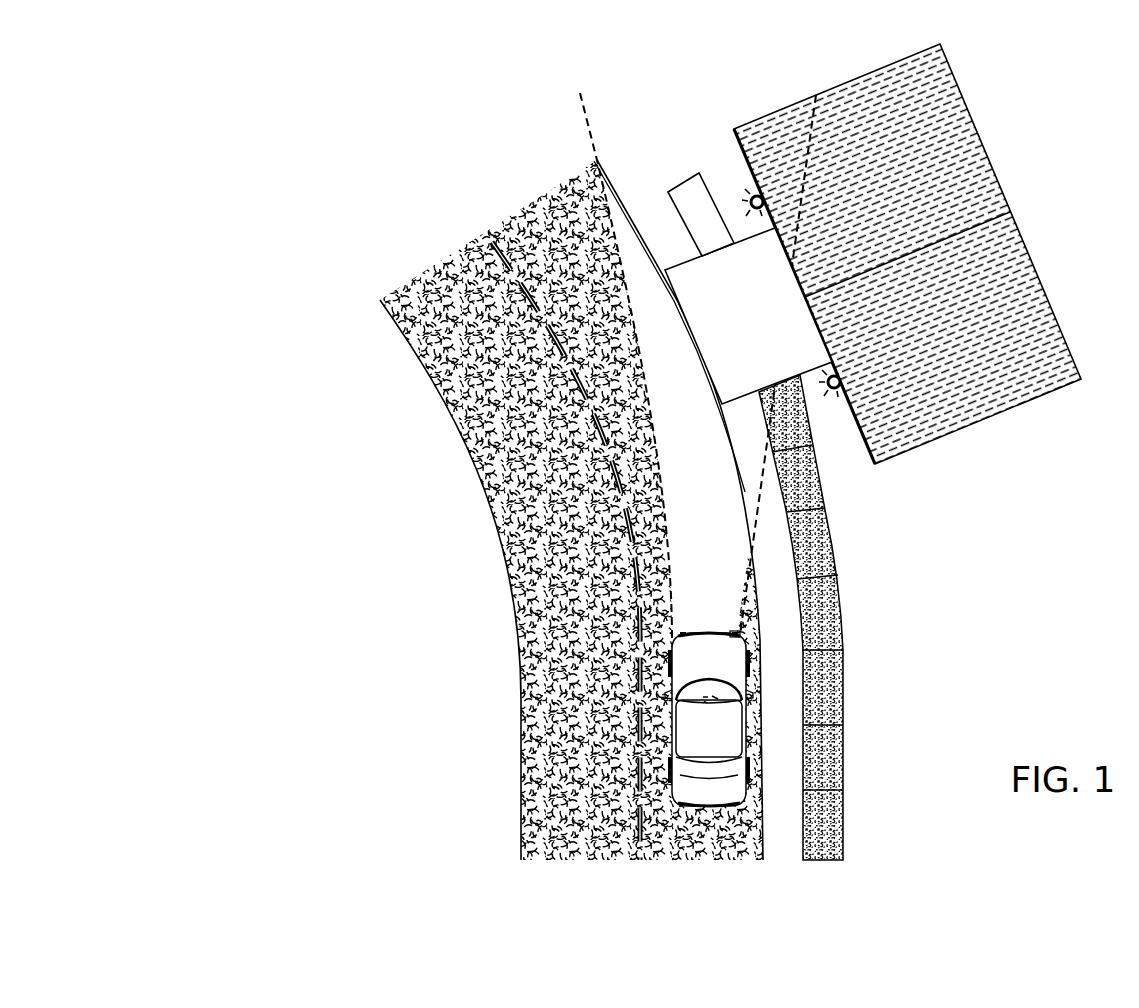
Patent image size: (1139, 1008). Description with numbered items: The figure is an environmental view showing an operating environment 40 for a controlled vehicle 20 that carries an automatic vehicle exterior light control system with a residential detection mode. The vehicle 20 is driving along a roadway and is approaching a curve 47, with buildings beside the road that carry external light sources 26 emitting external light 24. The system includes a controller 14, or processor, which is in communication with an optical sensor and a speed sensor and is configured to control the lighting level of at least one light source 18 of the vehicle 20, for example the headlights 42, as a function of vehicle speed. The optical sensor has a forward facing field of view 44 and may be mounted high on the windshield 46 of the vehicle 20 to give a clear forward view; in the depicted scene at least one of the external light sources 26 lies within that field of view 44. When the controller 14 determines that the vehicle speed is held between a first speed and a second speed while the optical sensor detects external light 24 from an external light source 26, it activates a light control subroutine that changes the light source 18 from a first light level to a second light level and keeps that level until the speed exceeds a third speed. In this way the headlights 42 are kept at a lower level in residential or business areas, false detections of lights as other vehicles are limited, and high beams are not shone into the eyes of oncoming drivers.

The controller 14 is at (517, 703).
The light source 18 is at (870, 563).
The controlled vehicle 20 is at (699, 748).
The external light 24 is at (741, 182).
The external light source 26 is at (763, 198).
The operating environment 40 is at (284, 211).
The headlights 42 is at (743, 629).
The forward facing field of view 44 is at (697, 561).
The windshield 46 is at (718, 691).
The curve 47 is at (349, 537).